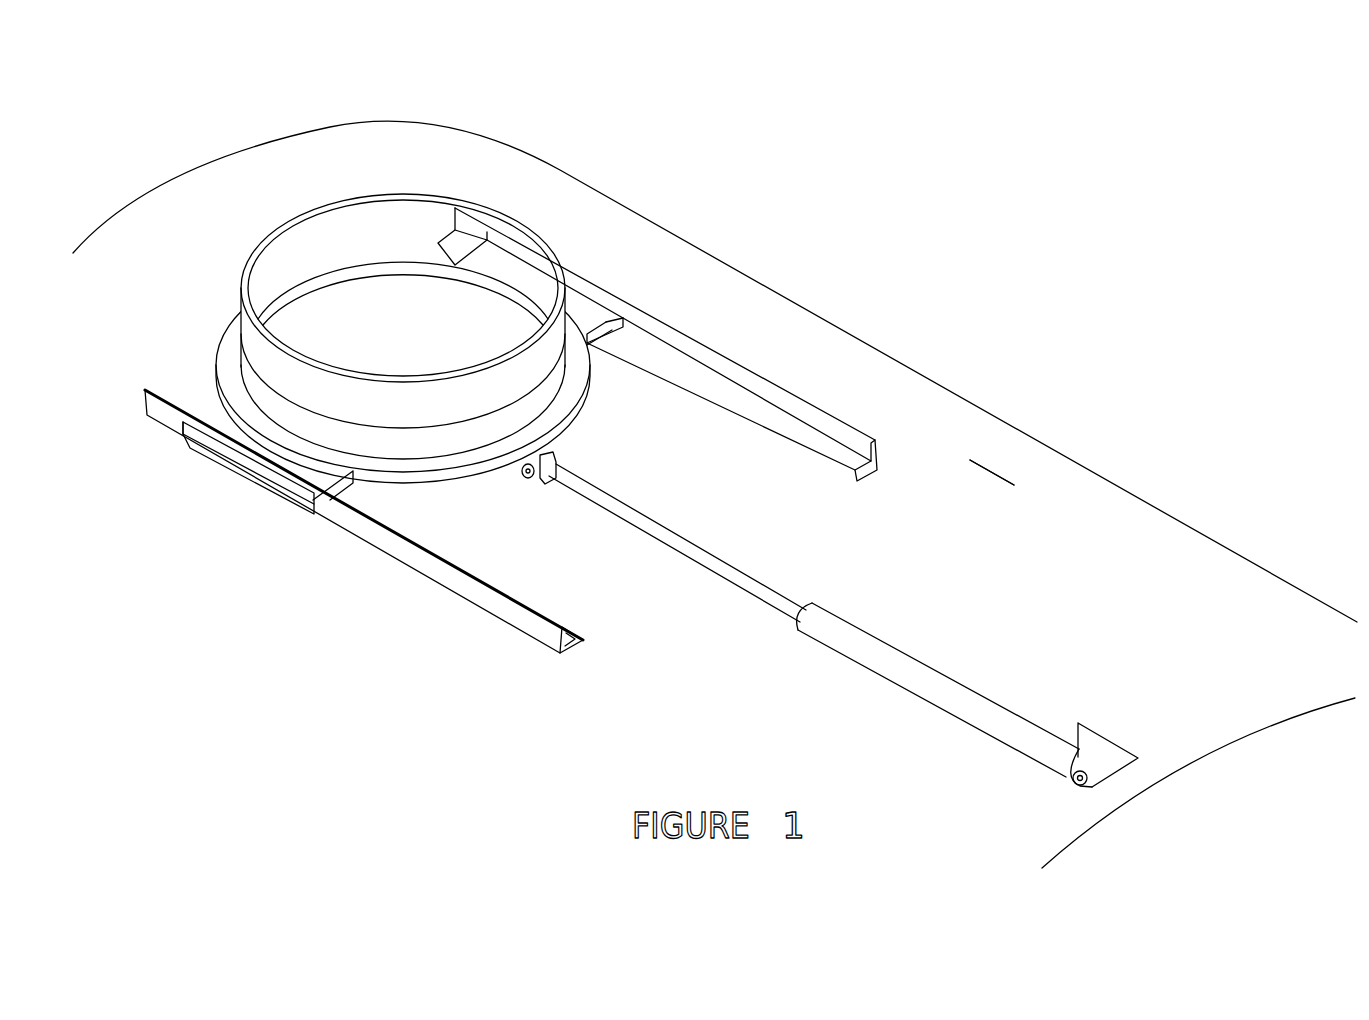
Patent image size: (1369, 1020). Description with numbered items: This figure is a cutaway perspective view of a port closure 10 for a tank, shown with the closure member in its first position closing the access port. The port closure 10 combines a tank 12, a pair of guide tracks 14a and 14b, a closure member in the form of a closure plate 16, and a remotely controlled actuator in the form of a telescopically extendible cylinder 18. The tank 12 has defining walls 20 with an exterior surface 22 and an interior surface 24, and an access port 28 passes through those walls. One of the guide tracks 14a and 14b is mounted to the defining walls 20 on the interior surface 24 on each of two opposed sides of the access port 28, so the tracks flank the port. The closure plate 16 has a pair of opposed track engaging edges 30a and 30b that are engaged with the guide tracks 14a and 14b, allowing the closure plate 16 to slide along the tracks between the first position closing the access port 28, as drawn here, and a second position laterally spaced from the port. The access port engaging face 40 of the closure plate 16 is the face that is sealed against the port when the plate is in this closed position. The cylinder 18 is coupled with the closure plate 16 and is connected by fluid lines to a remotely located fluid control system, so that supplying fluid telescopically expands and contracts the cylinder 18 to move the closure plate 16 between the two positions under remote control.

The port closure 10 is at (262, 120).
The tank 12 is at (880, 333).
The guide track 14a is at (715, 367).
The guide track 14b is at (452, 580).
The closure plate 16 is at (423, 232).
The telescopically extendible cylinder 18 is at (935, 683).
The defining walls 20 is at (437, 122).
The exterior surface 22 is at (964, 422).
The interior surface 24 is at (1014, 485).
The access port 28 is at (533, 230).
The track engaging edge 30a is at (587, 307).
The track engaging edge 30b is at (230, 416).
The access port engaging face 40 is at (338, 335).